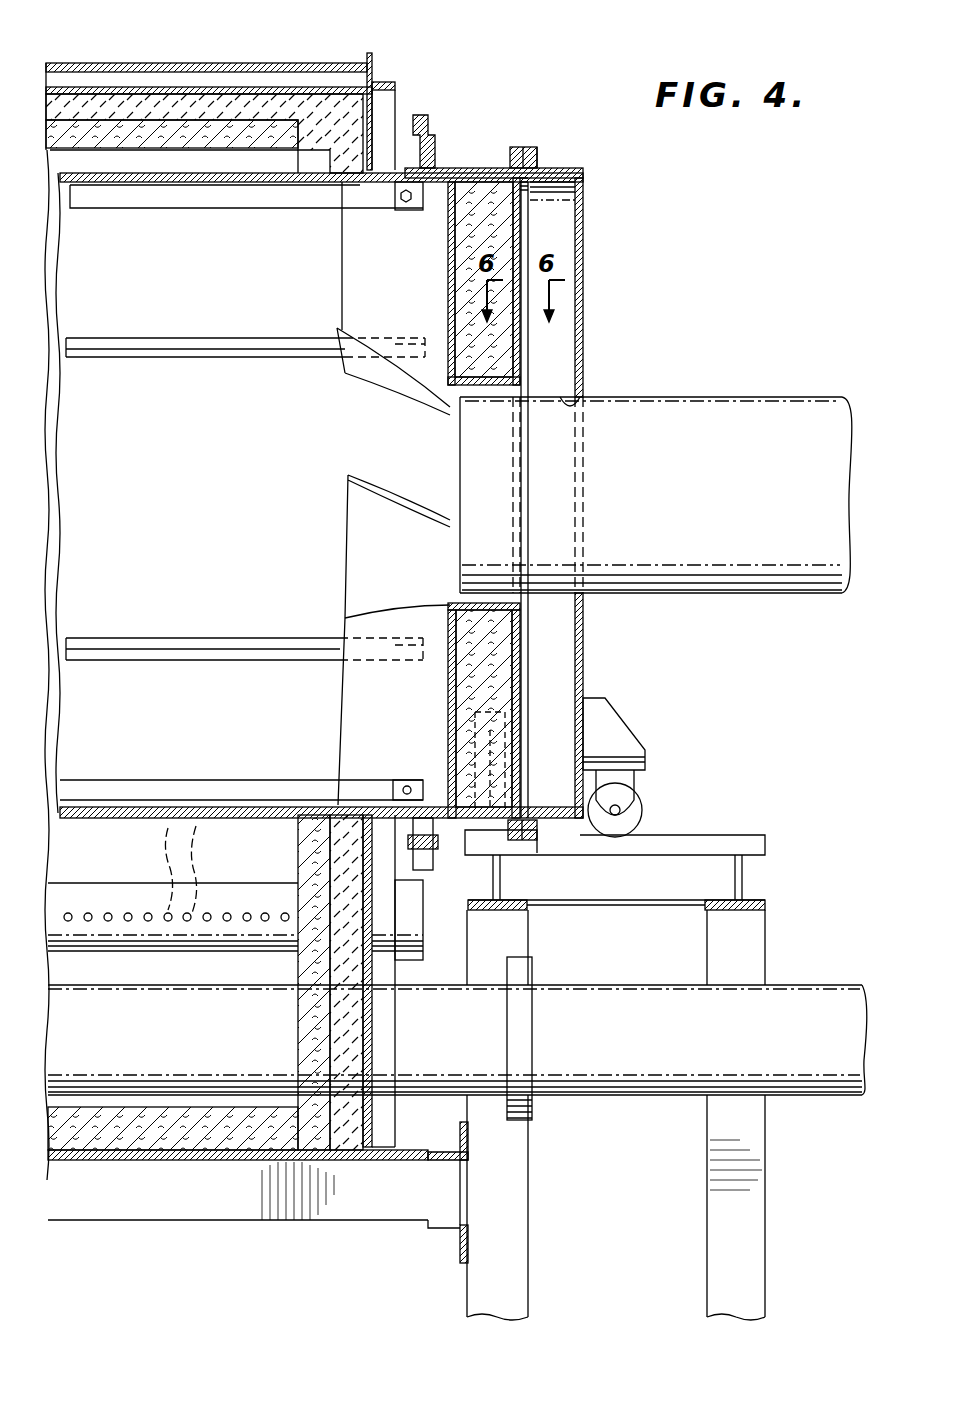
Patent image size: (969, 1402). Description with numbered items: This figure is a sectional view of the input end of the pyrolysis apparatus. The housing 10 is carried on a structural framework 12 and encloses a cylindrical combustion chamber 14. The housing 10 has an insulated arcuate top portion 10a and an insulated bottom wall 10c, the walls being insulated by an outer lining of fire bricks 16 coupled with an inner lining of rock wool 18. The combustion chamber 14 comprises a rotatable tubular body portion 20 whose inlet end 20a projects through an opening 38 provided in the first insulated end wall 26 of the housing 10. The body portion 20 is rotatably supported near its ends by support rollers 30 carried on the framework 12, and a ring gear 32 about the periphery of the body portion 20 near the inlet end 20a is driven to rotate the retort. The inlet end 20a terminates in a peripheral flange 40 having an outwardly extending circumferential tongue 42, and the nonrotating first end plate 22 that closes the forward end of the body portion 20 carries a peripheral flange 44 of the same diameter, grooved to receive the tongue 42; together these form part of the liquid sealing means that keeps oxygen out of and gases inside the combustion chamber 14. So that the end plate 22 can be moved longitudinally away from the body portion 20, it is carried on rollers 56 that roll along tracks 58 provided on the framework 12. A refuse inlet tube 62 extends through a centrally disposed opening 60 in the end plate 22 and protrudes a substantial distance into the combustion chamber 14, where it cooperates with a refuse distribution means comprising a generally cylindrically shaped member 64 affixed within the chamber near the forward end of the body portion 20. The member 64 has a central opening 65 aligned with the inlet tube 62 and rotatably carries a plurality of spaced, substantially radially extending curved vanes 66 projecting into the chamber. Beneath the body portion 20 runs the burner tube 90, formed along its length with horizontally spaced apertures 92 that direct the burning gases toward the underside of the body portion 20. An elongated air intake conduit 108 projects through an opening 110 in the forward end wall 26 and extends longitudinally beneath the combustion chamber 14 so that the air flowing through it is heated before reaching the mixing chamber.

The housing 10 is at (309, 87).
The insulated arcuate top portion 10a is at (79, 100).
The insulated bottom wall 10c is at (185, 1150).
The structural framework 12 is at (755, 950).
The combustion chamber 14 is at (245, 499).
The fire bricks 16 is at (148, 100).
The rock wool 18 is at (218, 130).
The tubular body portion 20 is at (178, 185).
The inlet end 20a is at (432, 213).
The first end plate 22 is at (583, 228).
The first insulated end wall 26 is at (378, 110).
The support rollers 30 is at (456, 725).
The ring gear 32 is at (430, 125).
The opening 38 is at (342, 228).
The peripheral flange 40 is at (511, 147).
The circumferential tongue portion 42 is at (523, 153).
The peripheral flange 44 is at (540, 150).
The rollers 56 is at (645, 800).
The tracks 58 is at (745, 835).
The centrally disposed opening 60 is at (583, 407).
The refuse inlet tube 62 is at (800, 405).
The cylindrically shaped member 64 is at (495, 652).
The central opening 65 is at (530, 393).
The curved vanes 66 is at (393, 385).
The burner tube 90 is at (125, 890).
The apertures 92 is at (247, 912).
The elongated conduit 108 is at (650, 1070).
The opening 110 is at (370, 1068).